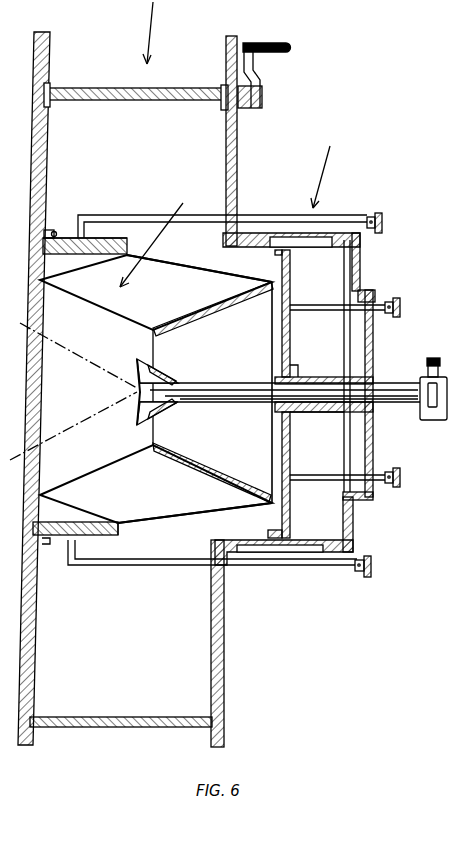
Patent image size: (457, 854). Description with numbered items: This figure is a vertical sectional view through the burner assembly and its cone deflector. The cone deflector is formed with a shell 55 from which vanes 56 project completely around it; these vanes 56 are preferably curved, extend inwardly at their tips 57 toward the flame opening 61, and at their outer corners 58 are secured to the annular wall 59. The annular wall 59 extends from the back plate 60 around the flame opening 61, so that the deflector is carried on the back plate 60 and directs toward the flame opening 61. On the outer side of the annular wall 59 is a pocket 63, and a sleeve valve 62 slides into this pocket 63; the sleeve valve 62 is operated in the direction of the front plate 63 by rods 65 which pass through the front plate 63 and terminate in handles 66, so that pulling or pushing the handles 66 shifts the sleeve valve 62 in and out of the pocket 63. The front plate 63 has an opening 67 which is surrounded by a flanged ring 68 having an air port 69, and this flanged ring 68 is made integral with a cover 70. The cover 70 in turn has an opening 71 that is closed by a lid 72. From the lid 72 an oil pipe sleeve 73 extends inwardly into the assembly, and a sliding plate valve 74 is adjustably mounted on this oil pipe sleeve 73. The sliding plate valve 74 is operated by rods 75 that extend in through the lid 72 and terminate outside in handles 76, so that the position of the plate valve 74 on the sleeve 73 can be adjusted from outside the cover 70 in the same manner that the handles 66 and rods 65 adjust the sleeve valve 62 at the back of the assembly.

The shell 55 is at (176, 318).
The vanes 56 is at (176, 264).
The tips 57 is at (70, 472).
The outer corners 58 is at (120, 530).
The annular wall 59 is at (80, 257).
The back plate 60 is at (45, 178).
The flame opening 61 is at (156, 389).
The sleeve valve 62 is at (100, 242).
The pocket 63 is at (56, 230).
The rods 65 is at (258, 217).
The handles 66 is at (384, 221).
The opening 67 is at (240, 392).
The flanged ring 68 is at (320, 553).
The air port 69 is at (312, 236).
The cover 70 is at (361, 268).
The opening 71 is at (324, 373).
The lid 72 is at (375, 348).
The oil pipe sleeve 73 is at (314, 413).
The sliding plate valve 74 is at (291, 290).
The rods 75 is at (380, 303).
The handles 76 is at (401, 307).